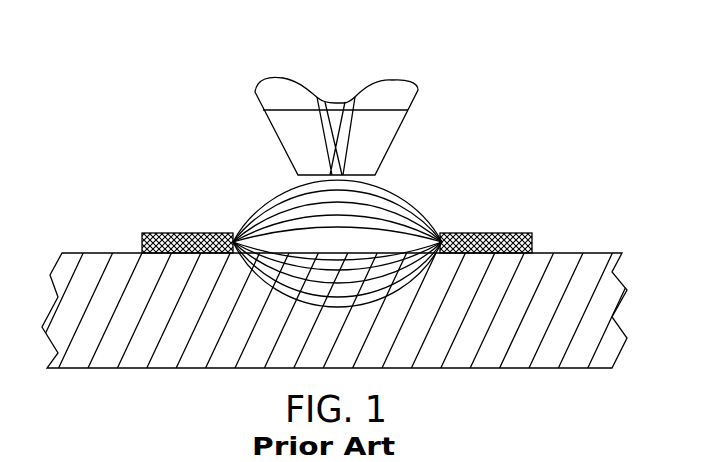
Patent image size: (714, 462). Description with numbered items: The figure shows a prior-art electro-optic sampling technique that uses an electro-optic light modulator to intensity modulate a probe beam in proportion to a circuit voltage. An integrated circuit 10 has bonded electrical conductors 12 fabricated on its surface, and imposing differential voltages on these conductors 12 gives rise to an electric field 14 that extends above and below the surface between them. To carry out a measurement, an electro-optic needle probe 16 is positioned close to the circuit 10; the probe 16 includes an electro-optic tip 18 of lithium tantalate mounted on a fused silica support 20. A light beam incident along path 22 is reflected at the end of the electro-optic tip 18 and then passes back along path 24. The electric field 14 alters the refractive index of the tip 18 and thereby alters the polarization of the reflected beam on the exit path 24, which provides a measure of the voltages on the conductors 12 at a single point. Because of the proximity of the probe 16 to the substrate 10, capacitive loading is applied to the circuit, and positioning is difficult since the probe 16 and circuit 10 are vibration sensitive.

The integrated circuit 10 is at (171, 320).
The bonded electrical conductors 12 is at (160, 232).
The electric field 14 is at (252, 198).
The electro-optic needle probe 16 is at (326, 106).
The electro-optic tip 18 is at (383, 139).
The fused silica support 20 is at (402, 100).
The incident light path 22 is at (323, 85).
The exit path 24 is at (343, 104).